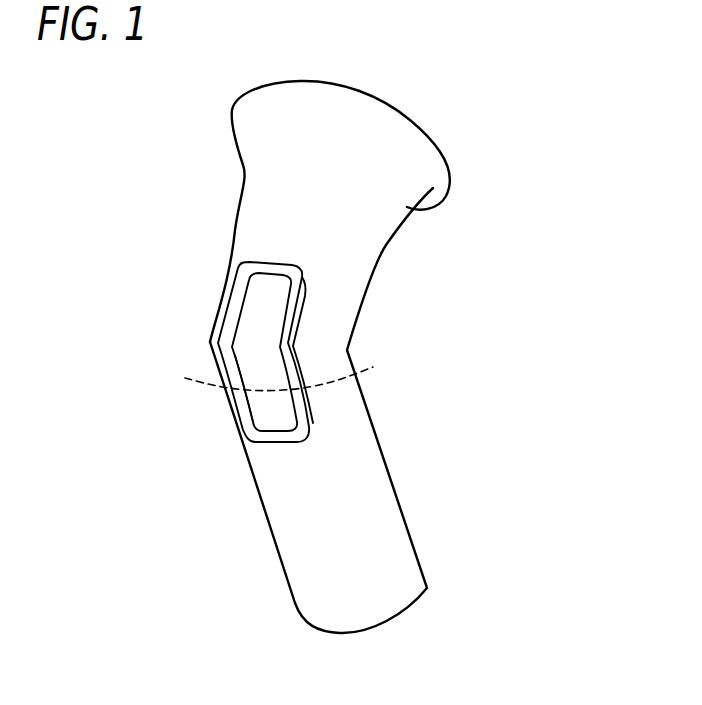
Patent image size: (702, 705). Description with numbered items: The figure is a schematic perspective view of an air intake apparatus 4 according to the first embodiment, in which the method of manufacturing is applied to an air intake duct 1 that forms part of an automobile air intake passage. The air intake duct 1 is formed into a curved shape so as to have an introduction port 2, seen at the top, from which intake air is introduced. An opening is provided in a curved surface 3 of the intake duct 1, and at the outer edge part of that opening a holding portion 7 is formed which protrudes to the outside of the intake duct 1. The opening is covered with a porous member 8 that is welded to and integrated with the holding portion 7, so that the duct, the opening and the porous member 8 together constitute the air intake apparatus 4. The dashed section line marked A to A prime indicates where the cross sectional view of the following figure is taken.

The air intake duct 1 is at (358, 258).
The introduction port 2 is at (388, 86).
The curved surface 3 is at (310, 343).
The air intake apparatus 4 is at (484, 342).
The holding portion 7 is at (297, 435).
The porous member 8 is at (262, 403).